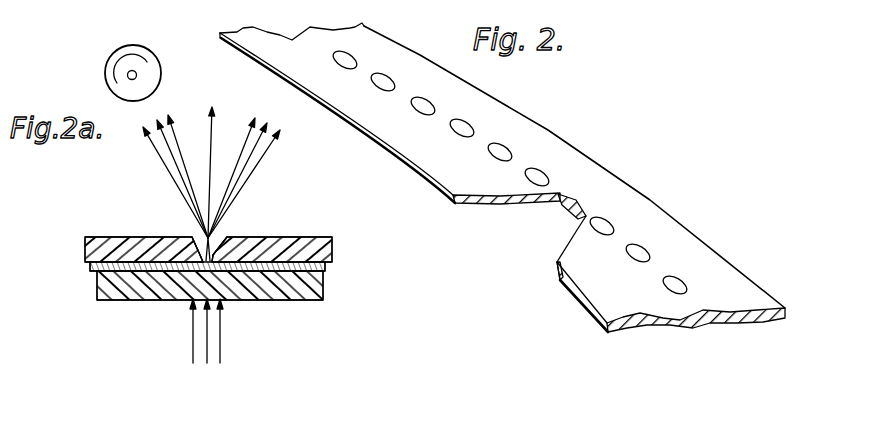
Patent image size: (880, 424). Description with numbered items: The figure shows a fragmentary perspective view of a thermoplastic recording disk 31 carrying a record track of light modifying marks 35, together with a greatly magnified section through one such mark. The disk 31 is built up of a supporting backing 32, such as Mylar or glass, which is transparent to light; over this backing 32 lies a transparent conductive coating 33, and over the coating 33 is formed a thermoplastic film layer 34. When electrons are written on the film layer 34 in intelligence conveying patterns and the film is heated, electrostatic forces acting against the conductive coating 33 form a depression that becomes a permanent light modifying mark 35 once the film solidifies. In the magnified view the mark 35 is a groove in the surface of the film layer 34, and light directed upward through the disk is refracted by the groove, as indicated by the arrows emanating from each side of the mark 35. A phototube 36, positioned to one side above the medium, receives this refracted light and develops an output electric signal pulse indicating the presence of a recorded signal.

In FIG. 2, the thermoplastic recording disk 31 is at (573, 151).
In FIG. 2A, the supporting backing 32 is at (158, 288).
In FIG. 2A, the transparent conductive coating 33 is at (90, 264).
In FIG. 2A, the thermoplastic film layer 34 is at (138, 243).
In FIG. 2, the light modifying mark 35 is at (412, 105).
In FIG. 2A, the light modifying mark 35 is at (228, 243).
In FIG. 2A, the phototube 36 is at (105, 67).